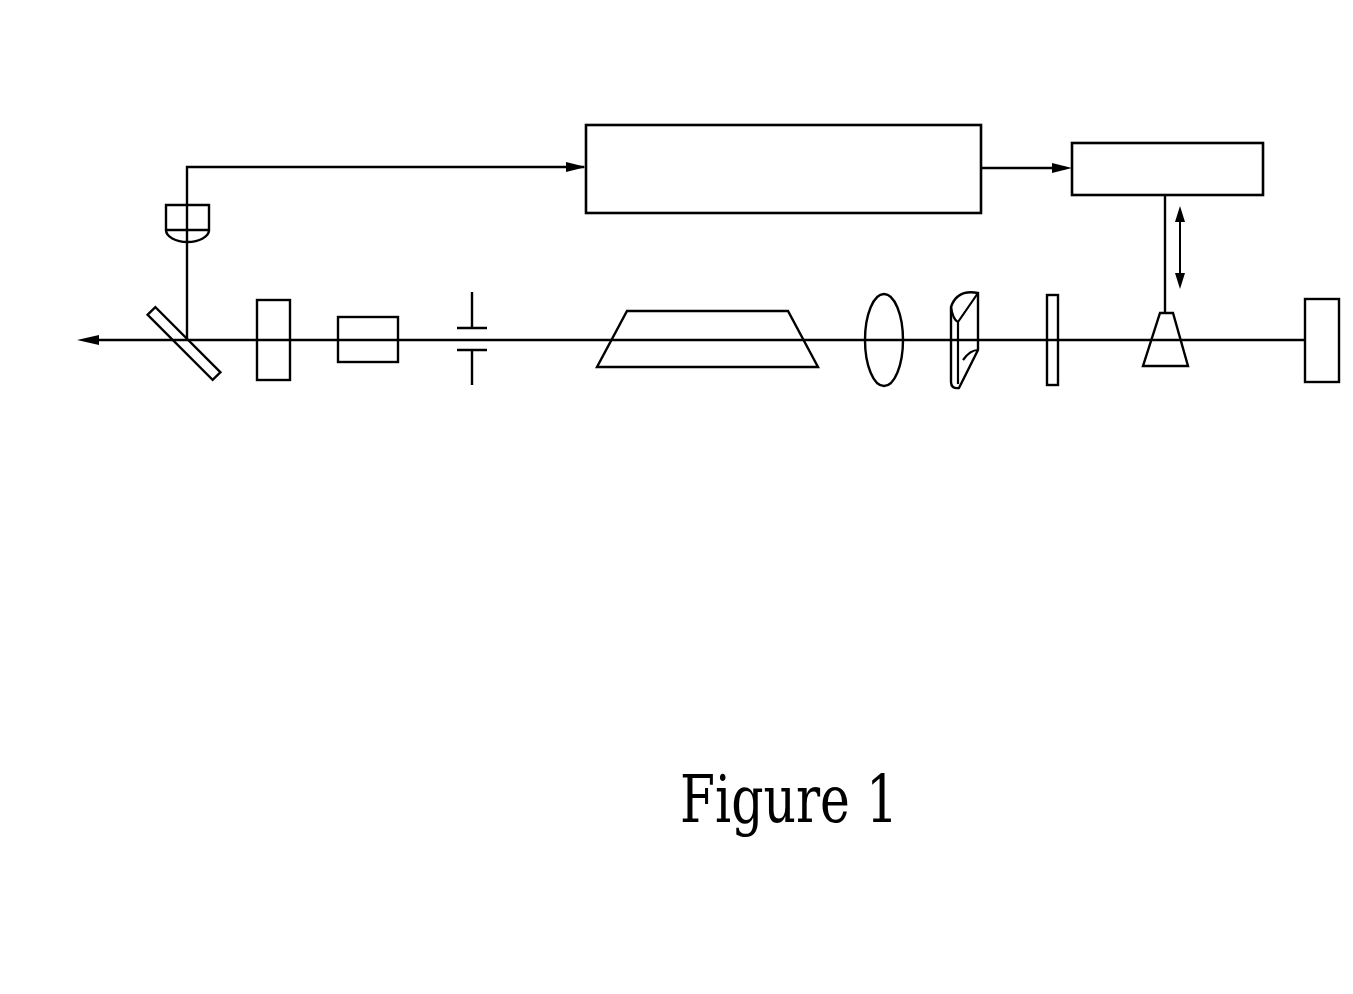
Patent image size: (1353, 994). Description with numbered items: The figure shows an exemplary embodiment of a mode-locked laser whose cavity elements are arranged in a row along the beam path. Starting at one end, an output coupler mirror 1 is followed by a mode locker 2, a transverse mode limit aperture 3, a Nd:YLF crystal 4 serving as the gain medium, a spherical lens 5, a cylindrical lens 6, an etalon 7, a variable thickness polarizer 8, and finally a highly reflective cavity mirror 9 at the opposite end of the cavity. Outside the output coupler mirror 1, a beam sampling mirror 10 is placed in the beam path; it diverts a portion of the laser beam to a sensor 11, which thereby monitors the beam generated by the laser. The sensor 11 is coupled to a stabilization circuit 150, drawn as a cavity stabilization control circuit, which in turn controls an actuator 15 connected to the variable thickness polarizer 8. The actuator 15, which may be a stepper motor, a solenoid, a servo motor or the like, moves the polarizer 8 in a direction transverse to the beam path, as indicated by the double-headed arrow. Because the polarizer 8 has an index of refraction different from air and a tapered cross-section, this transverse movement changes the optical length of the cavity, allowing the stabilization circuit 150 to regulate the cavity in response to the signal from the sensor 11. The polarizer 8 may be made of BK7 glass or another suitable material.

The output coupler mirror 1 is at (274, 388).
The mode locker 2 is at (367, 370).
The transverse mode limit aperture 3 is at (472, 393).
The Nd:YLF crystal 4 is at (707, 375).
The spherical lens 5 is at (884, 393).
The cylindrical lens 6 is at (970, 393).
The etalon 7 is at (1053, 393).
The variable thickness polarizer 8 is at (1165, 375).
The highly reflective cavity mirror 9 is at (1322, 390).
The beam sampling mirror 10 is at (196, 375).
The sensor 11 is at (209, 219).
The actuator 15 is at (1149, 143).
The stabilization circuit 150 is at (783, 125).